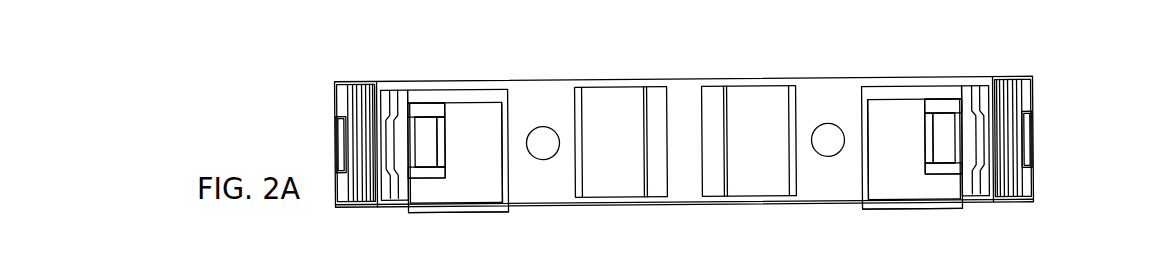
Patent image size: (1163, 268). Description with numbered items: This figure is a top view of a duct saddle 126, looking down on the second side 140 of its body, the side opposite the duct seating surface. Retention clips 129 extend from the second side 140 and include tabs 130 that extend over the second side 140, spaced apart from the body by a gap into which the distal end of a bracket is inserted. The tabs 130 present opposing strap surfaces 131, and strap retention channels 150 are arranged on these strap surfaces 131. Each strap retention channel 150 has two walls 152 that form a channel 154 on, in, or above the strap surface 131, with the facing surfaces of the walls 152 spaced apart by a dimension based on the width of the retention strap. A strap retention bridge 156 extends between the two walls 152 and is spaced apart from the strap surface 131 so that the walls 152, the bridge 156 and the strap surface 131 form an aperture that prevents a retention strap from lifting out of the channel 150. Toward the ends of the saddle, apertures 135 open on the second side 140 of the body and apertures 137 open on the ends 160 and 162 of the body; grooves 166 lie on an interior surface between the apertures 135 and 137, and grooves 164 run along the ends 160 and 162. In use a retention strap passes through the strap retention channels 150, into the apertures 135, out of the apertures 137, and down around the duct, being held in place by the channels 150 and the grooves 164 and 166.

The duct saddle 126 is at (1048, 66).
The retention clips 129 is at (449, 221).
The tabs 130 is at (480, 197).
The strap surfaces 131 is at (492, 187).
The apertures 135 is at (486, 95).
The apertures 137 is at (360, 94).
The second side 140 is at (812, 106).
The strap retention channels 150 is at (428, 96).
The walls 152 is at (437, 108).
The channel 154 is at (438, 157).
The strap retention bridge 156 is at (428, 137).
The end 160 is at (322, 138).
The end 162 is at (1050, 133).
The grooves 164 is at (337, 128).
The grooves 166 is at (400, 108).